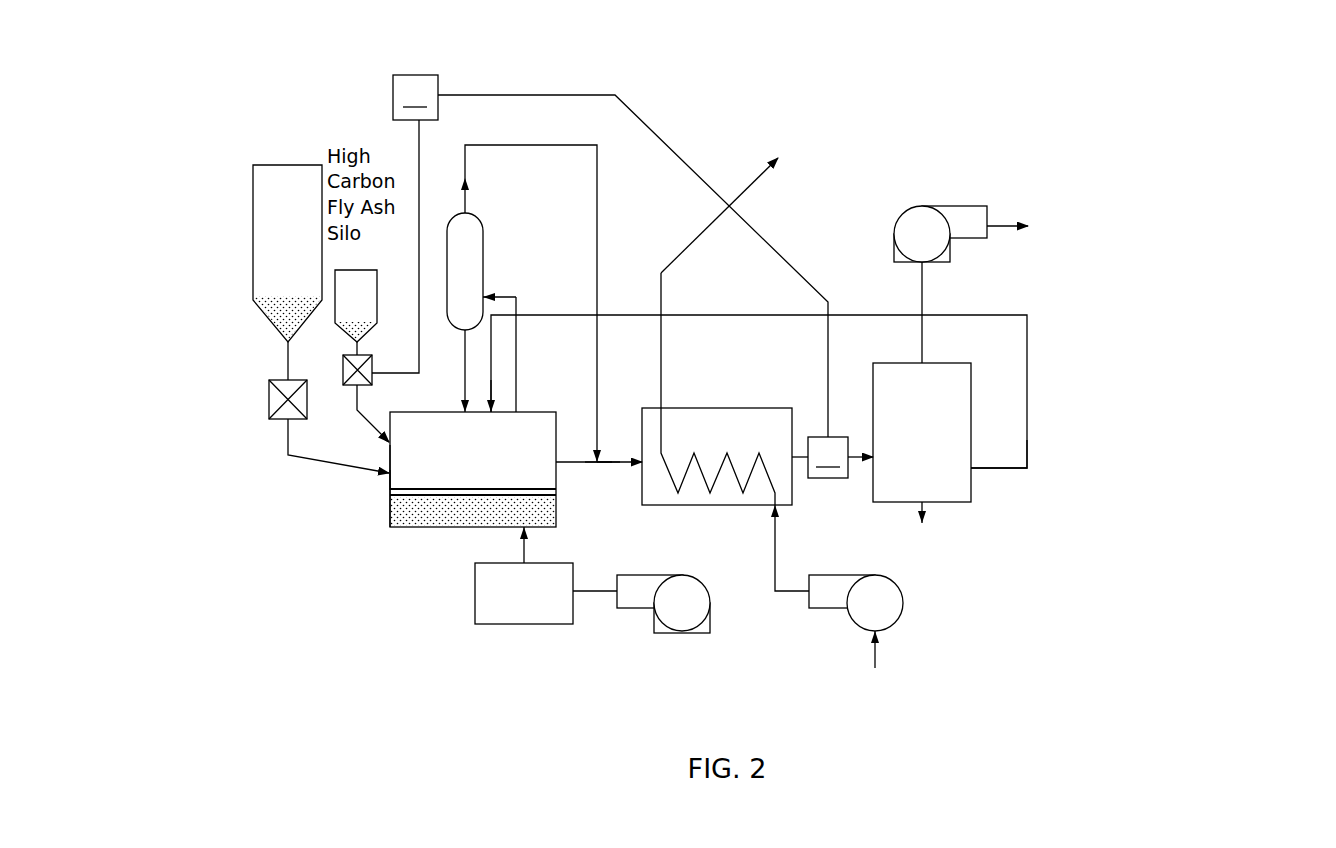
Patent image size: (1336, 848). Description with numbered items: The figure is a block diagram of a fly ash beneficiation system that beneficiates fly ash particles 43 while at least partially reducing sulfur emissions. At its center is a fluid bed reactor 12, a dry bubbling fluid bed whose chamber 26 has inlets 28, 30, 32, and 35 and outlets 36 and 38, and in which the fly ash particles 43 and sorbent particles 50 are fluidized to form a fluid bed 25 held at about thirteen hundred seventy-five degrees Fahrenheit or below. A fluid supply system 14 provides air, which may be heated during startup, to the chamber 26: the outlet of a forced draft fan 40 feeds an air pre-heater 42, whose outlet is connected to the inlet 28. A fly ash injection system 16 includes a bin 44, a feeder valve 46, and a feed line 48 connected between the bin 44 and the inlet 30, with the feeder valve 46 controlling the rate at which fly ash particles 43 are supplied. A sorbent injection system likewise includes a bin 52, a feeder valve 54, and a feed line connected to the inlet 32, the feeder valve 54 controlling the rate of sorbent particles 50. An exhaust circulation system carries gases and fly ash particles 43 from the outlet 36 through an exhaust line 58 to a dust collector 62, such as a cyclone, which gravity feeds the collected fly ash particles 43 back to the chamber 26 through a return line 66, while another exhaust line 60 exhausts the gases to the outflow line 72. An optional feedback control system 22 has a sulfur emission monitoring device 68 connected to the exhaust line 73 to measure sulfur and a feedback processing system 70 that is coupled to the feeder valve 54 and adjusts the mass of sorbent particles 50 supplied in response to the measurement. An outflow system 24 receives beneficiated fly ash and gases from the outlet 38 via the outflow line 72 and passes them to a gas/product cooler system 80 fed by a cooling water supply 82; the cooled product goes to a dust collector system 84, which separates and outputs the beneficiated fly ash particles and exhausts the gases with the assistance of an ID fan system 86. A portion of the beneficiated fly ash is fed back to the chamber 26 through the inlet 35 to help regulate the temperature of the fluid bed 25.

The fluid bed reactor 12 is at (439, 491).
The fluid supply system 14 is at (644, 615).
The fly ash injection system 16 is at (278, 328).
The feedback control system 22 is at (600, 220).
The outflow system 24 is at (600, 478).
The fluid bed 25 is at (428, 497).
The chamber 26 is at (388, 500).
The inlet 28 is at (537, 528).
The inlet 30 is at (388, 478).
The inlet 32 is at (388, 456).
The inlet 35 is at (493, 408).
The outlet 36 is at (518, 408).
The outlet 38 is at (558, 455).
The forced draft fan 40 is at (685, 618).
The air pre-heater 42 is at (475, 610).
The fly ash particles 43 is at (288, 317).
The bin 44 is at (253, 256).
The feeder valve 46 is at (270, 403).
The feed line 48 is at (307, 458).
The sorbent particles 50 is at (362, 322).
The bin 52 is at (365, 270).
The feeder valve 54 is at (373, 377).
The exhaust line 58 is at (517, 368).
The exhaust line 60 is at (463, 167).
The dust collector 62 is at (485, 289).
The return line 66 is at (464, 358).
The sulfur emission monitoring device 68 is at (840, 457).
The feedback processing system 70 is at (415, 97).
The outflow line 72 is at (603, 456).
The exhaust line 73 is at (793, 457).
The gas/product cooler system 80 is at (710, 505).
The cooling water supply 82 is at (904, 592).
The dust collector system 84 is at (972, 480).
The induced draft (ID) fan system 86 is at (893, 234).